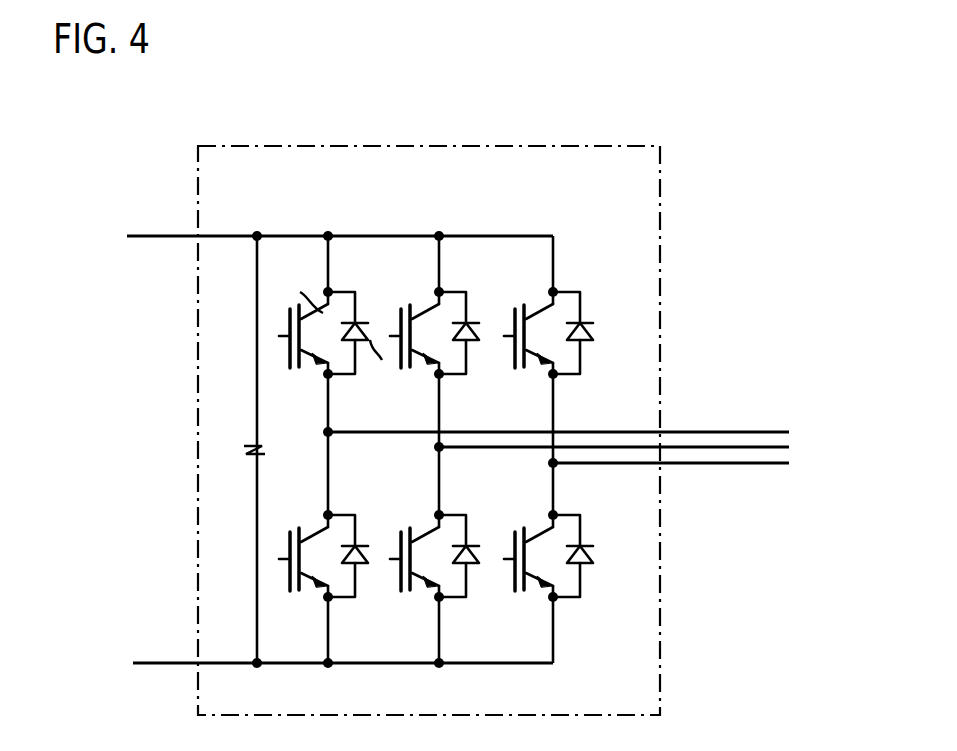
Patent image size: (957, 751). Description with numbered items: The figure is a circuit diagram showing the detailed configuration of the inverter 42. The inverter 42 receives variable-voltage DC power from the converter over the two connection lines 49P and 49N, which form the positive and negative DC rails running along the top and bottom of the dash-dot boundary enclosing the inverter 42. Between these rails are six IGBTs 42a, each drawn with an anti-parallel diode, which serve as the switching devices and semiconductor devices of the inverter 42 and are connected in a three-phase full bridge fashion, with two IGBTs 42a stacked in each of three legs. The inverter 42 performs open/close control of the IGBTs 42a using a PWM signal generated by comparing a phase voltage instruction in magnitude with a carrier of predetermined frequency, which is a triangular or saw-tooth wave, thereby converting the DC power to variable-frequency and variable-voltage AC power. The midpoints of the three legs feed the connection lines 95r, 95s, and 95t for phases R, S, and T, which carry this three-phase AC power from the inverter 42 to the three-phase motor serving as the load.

The inverter 42 is at (660, 202).
The IGBT 42a is at (588, 313).
The connection line 49P is at (158, 235).
The connection line 49N is at (175, 662).
The connection line 95r is at (708, 431).
The connection line 95s is at (758, 448).
The connection line 95t is at (725, 467).